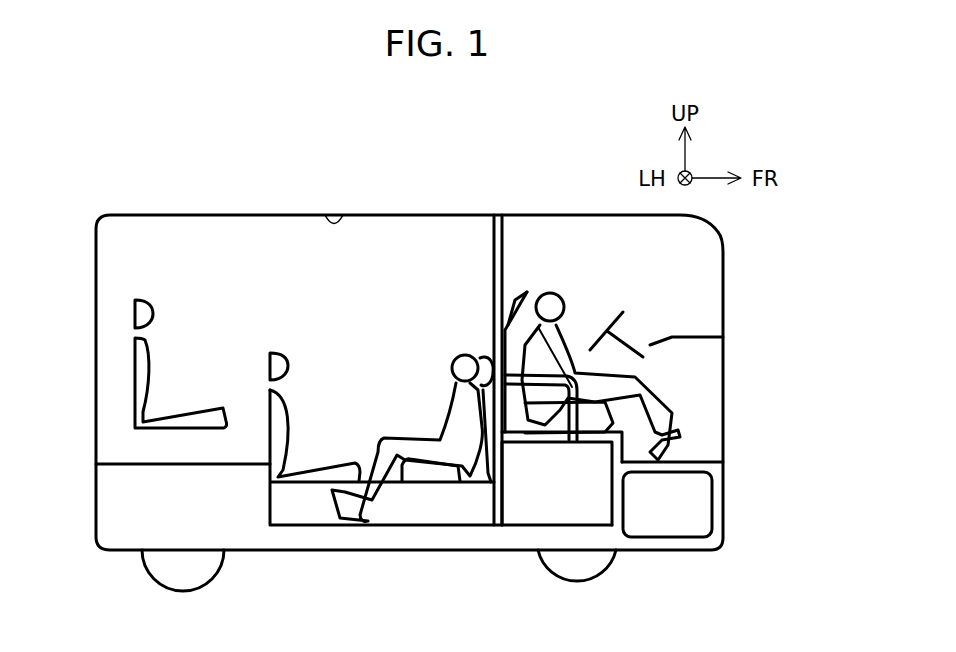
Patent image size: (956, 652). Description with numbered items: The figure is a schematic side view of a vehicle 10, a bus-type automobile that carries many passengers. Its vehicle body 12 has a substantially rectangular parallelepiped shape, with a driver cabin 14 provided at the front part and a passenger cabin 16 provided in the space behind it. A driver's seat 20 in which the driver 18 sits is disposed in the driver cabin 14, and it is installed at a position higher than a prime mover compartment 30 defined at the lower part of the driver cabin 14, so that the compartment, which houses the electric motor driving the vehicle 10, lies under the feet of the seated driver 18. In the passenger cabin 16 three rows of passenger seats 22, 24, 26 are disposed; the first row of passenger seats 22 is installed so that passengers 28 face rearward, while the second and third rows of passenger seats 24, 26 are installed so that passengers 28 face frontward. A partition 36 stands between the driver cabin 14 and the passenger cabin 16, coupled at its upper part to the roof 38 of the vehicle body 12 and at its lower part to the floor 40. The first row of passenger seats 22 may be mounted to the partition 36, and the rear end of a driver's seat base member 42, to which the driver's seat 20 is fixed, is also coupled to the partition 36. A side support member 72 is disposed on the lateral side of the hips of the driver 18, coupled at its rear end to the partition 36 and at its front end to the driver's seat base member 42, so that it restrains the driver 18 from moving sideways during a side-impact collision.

The vehicle 10 is at (158, 178).
The vehicle body 12 is at (283, 215).
The driver cabin 14 is at (621, 267).
The passenger cabin 16 is at (245, 284).
The driver 18 is at (553, 292).
The driver's seat 20 is at (528, 407).
The first row of passenger seats 22 is at (432, 473).
The second row of passenger seats 24 is at (315, 477).
The third row of passenger seats 26 is at (198, 422).
The passengers 28 is at (464, 355).
The prime mover compartment 30 is at (655, 517).
The partition 36 is at (503, 242).
The roof 38 is at (343, 215).
The floor 40 is at (472, 525).
The driver's seat base member 42 is at (587, 442).
The side support member 72 is at (580, 378).